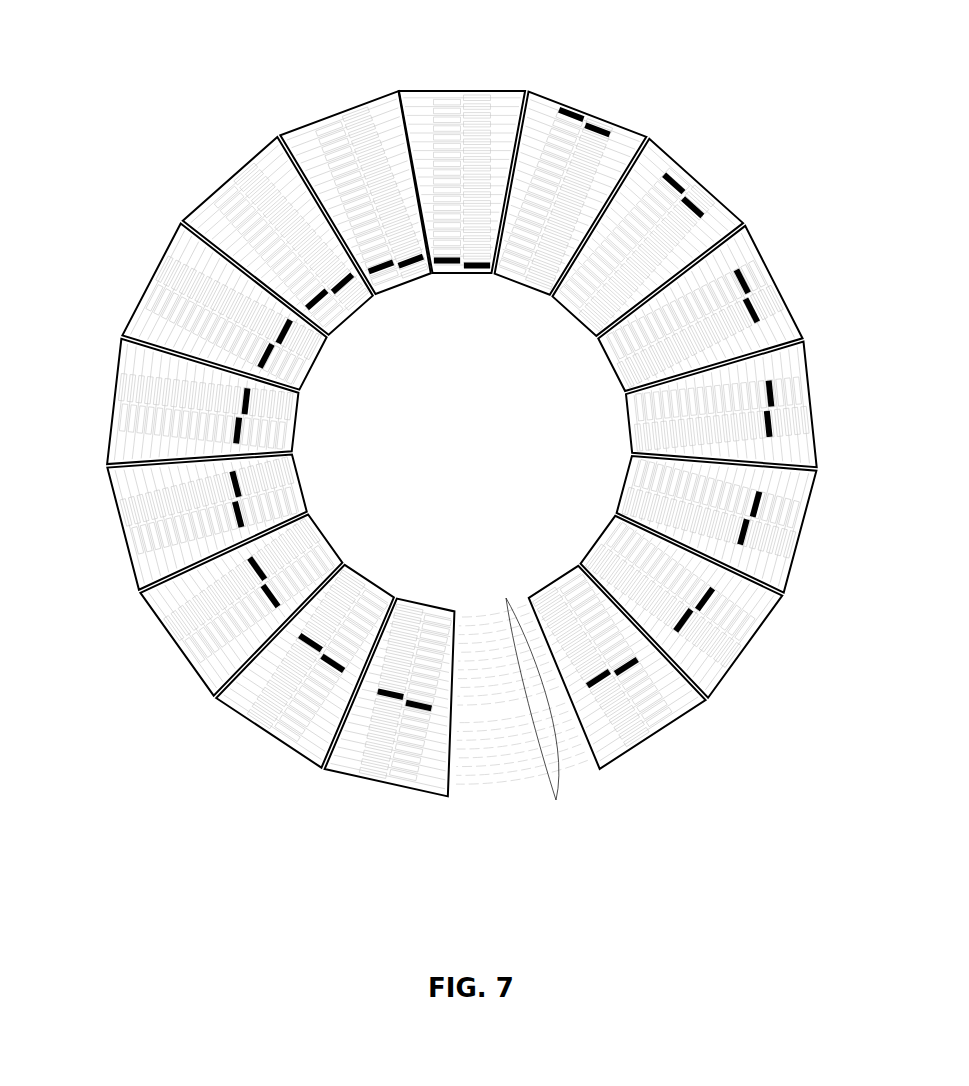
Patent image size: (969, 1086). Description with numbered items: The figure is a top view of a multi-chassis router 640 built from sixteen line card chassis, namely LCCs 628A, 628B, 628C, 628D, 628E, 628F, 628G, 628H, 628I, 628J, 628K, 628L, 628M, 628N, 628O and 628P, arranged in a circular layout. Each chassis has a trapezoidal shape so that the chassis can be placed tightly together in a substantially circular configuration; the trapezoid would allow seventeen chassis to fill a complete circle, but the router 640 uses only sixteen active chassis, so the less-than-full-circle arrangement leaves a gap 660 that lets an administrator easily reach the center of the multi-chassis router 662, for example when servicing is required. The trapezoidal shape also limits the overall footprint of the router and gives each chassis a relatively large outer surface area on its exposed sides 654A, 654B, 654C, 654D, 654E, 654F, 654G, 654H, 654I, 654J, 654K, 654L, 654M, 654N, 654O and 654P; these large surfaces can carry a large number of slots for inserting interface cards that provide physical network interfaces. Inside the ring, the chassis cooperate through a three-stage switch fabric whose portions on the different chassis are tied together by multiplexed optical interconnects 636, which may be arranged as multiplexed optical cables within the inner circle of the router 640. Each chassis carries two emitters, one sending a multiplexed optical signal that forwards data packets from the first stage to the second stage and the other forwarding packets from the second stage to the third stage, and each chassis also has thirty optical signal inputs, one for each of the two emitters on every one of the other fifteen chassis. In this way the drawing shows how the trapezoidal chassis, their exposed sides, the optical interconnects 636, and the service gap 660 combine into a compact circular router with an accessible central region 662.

The multi-chassis router 640 is at (140, 36).
The gap 660 is at (472, 823).
The center of multi-chassis router 662 is at (465, 428).
The multiplexed optical interconnects 636 is at (557, 800).
The exposed side 654A is at (403, 789).
The exposed side 654B is at (270, 741).
The exposed side 654C is at (163, 634).
The exposed side 654D is at (126, 578).
The exposed side 654E is at (106, 427).
The exposed side 654F is at (157, 266).
The exposed side 654G is at (244, 162).
The exposed side 654H is at (348, 106).
The exposed side 654I is at (437, 84).
The exposed side 654J is at (580, 102).
The exposed side 654K is at (684, 160).
The exposed side 654L is at (773, 263).
The exposed side 654M is at (820, 434).
The exposed side 654N is at (797, 577).
The exposed side 654O is at (757, 638).
The exposed side 654P is at (655, 744).
The line card chassis 628A is at (420, 612).
The line card chassis 628B is at (374, 581).
The line card chassis 628C is at (330, 540).
The line card chassis 628D is at (302, 486).
The line card chassis 628E is at (298, 403).
The line card chassis 628F is at (314, 356).
The line card chassis 628G is at (352, 318).
The line card chassis 628H is at (400, 286).
The line card chassis 628I is at (455, 274).
The line card chassis 628J is at (522, 284).
The line card chassis 628K is at (577, 318).
The line card chassis 628L is at (610, 364).
The line card chassis 628M is at (627, 430).
The line card chassis 628N is at (624, 486).
The line card chassis 628O is at (594, 541).
The line card chassis 628P is at (548, 583).